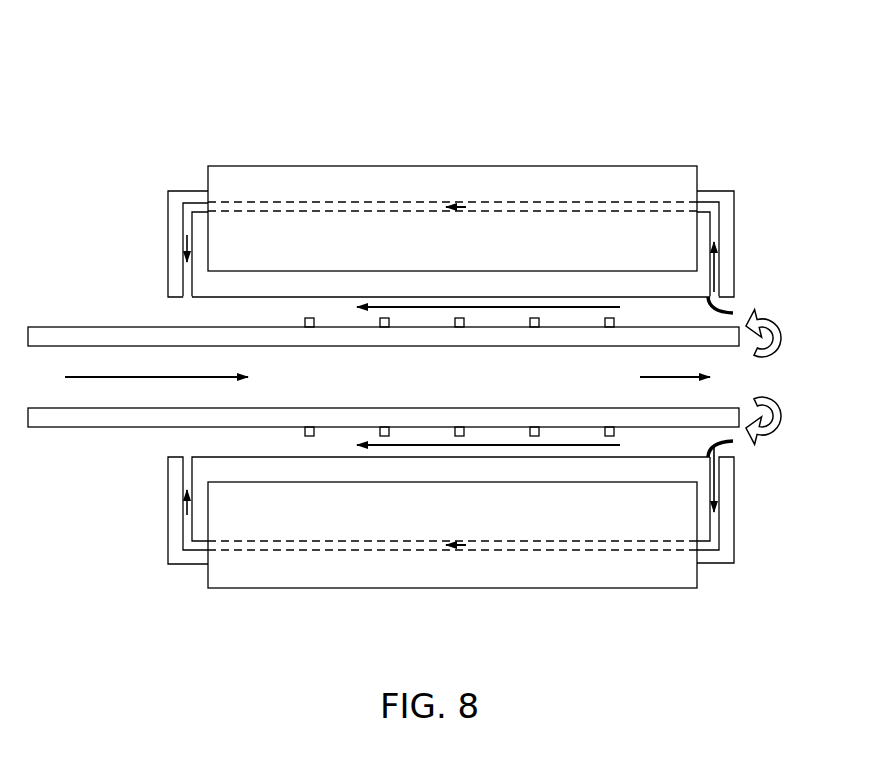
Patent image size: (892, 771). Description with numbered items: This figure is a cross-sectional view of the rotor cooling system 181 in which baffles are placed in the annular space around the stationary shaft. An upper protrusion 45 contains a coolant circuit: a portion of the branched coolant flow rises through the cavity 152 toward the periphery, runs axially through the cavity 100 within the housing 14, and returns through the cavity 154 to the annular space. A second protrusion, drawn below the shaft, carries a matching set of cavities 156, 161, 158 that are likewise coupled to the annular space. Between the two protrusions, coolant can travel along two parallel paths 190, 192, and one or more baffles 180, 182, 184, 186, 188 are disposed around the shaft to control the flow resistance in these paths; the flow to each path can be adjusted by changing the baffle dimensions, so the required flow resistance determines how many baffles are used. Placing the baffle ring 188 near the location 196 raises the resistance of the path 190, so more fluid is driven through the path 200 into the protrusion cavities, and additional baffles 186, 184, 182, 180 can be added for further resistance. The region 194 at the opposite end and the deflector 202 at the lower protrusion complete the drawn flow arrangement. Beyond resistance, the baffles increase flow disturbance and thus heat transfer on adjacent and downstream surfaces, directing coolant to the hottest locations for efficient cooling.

The rotor cooling system 181 is at (740, 48).
The upper dryer housing 14 is at (593, 172).
The cavity 100 is at (373, 202).
The protrusion 45 is at (724, 195).
The cavity 152 is at (718, 219).
The cavity 154 is at (187, 243).
The left outlet region 194 is at (163, 323).
The location in the annular space 196 is at (692, 323).
The path 200 is at (724, 306).
The parallel path 190 is at (497, 303).
The baffle 180 is at (305, 322).
The baffle 182 is at (380, 322).
The baffle 184 is at (455, 322).
The baffle 186 is at (530, 322).
The baffle ring 188 is at (605, 322).
The parallel path 192 is at (440, 449).
The lower deflector 202 is at (724, 449).
The cavity 161 is at (450, 550).
The cavity 158 is at (187, 533).
The cavity 156 is at (716, 535).